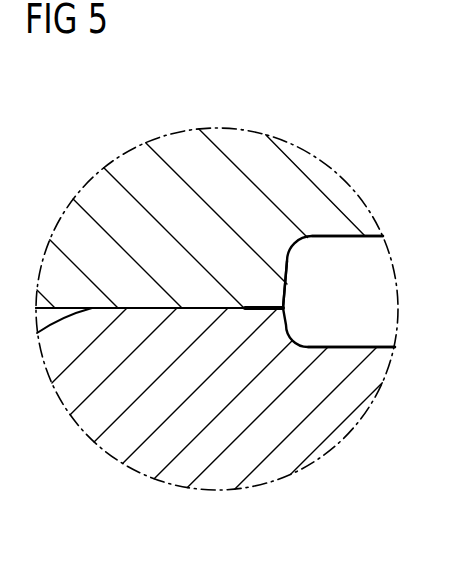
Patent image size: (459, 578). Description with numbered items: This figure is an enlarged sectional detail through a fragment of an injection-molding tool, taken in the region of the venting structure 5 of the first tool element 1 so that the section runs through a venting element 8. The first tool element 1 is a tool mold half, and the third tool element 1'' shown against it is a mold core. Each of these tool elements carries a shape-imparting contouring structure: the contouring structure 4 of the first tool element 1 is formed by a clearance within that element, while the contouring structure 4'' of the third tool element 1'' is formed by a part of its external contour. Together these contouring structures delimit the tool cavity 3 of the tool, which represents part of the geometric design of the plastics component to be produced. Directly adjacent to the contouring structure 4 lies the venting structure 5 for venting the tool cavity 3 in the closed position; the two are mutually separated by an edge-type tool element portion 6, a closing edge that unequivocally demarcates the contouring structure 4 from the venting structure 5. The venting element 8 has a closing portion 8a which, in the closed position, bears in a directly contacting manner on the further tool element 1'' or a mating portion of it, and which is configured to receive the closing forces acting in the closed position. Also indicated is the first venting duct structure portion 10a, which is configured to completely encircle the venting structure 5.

The third tool element 1'' is at (217, 281).
The first tool element 1 is at (217, 431).
The tool cavity 3 is at (365, 268).
The contouring structure of the third tool element 4'' is at (355, 189).
The contouring structure of the first tool element 4 is at (354, 395).
The venting structure 5 is at (257, 292).
The edge-type tool element portion 6 is at (287, 310).
The venting element 8 is at (189, 324).
The closing portion 8a is at (155, 312).
The first venting duct structure portion 10a is at (53, 345).